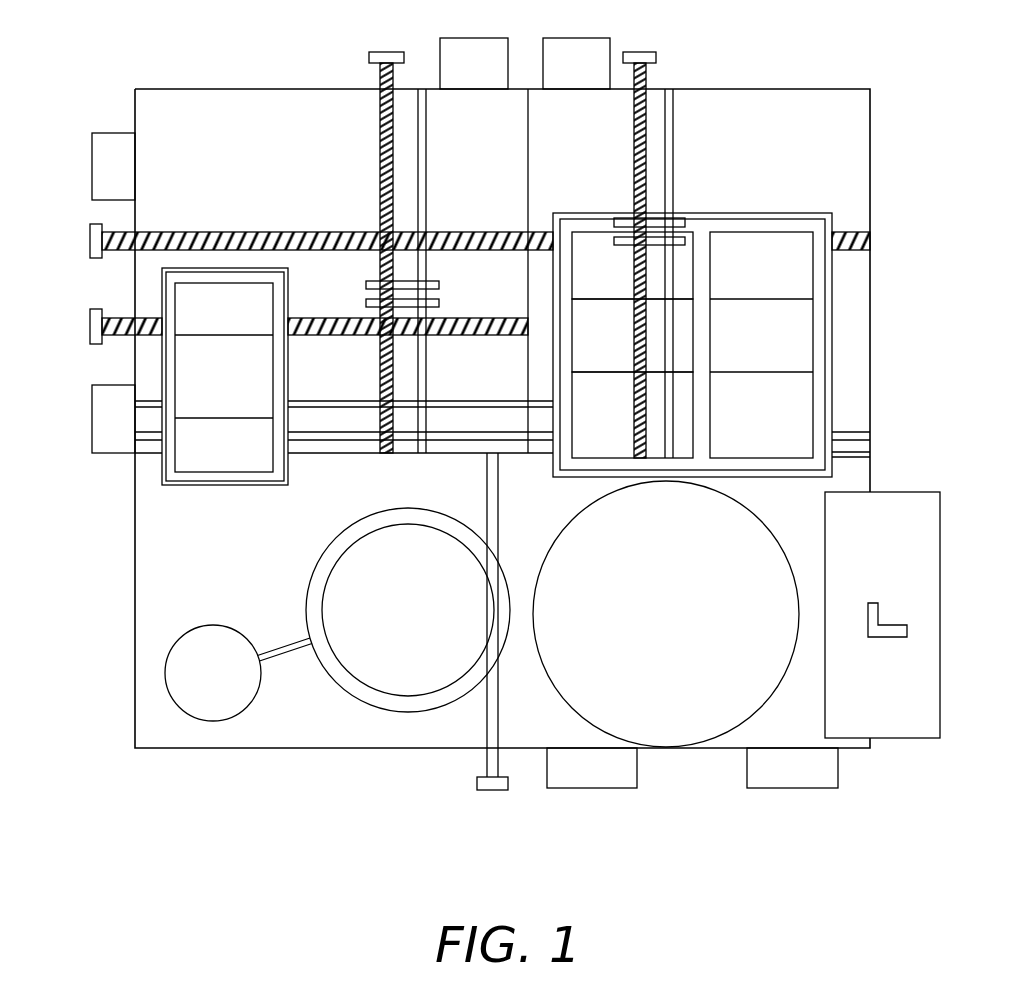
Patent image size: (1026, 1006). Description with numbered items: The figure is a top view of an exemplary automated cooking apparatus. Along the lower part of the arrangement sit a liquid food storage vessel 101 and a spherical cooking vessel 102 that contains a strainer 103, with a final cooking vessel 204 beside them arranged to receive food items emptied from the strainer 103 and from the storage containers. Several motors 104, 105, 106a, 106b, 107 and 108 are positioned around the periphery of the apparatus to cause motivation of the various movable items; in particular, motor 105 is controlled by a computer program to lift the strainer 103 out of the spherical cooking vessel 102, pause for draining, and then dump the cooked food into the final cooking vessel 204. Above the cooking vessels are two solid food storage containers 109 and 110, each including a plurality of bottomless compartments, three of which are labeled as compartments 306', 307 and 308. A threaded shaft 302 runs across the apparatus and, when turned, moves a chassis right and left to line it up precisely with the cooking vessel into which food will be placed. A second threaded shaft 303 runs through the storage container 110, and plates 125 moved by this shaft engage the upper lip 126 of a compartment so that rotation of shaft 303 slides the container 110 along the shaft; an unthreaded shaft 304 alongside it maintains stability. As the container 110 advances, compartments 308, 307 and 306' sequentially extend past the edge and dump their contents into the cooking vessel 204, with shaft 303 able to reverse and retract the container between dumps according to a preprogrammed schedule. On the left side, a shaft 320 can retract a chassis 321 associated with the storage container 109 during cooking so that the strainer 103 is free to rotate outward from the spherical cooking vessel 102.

The liquid food storage vessel 101 is at (213, 673).
The spherical cooking vessel 102 is at (412, 710).
The strainer 103 is at (384, 542).
The motor 104 is at (792, 768).
The motor 105 is at (592, 768).
The motor 106a is at (474, 63).
The motor 106b is at (576, 63).
The motor 107 is at (125, 133).
The motor 108 is at (122, 385).
The solid food storage container 109 is at (187, 458).
The solid food storage container 110 is at (727, 247).
The plates 125 is at (626, 216).
The upper lip 126 is at (605, 241).
The final cooking vessel 204 is at (666, 614).
The threaded shaft 302 is at (103, 226).
The second threaded shaft 303 is at (645, 52).
The unthreaded shaft 304 is at (688, 103).
The compartment 306' is at (632, 265).
The compartment 307 is at (632, 335).
The compartment 308 is at (632, 415).
The shaft 320 is at (373, 52).
The chassis 321 is at (214, 485).